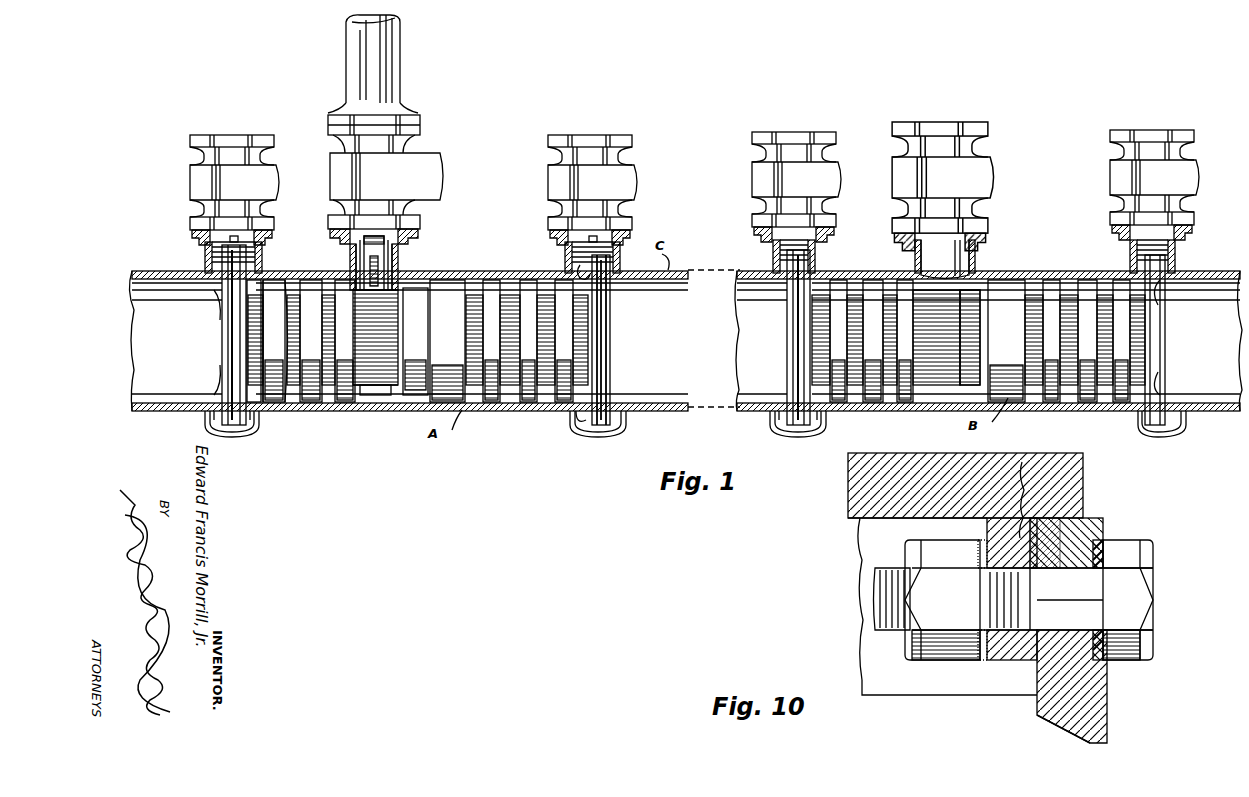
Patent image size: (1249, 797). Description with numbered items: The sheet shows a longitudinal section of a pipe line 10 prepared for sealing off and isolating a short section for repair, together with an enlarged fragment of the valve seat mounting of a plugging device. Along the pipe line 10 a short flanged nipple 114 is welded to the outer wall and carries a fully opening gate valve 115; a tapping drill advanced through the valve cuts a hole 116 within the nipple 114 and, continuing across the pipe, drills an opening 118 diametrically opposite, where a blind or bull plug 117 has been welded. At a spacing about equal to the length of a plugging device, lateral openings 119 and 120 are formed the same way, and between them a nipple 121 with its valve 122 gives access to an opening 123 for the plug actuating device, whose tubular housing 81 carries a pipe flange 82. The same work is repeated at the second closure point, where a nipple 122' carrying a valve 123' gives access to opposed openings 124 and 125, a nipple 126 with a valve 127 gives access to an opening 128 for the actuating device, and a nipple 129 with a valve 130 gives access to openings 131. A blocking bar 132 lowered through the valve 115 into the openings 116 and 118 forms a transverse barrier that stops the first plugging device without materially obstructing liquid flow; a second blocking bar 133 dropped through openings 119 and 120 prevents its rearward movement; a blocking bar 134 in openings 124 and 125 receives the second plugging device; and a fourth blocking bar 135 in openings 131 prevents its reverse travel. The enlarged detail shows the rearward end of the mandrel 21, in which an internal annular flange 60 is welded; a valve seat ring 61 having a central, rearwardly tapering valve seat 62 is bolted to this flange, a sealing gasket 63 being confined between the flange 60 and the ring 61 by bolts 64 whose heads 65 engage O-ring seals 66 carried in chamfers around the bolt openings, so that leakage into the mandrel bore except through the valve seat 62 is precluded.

In FIG. 1, the pipe line 10 is at (412, 408).
In FIG. 1, the tubular housing 81 is at (393, 65).
In FIG. 1, the pipe flange 82 is at (420, 118).
In FIG. 1, the flanged nipple 114 is at (208, 244).
In FIG. 1, the gate valve 115 is at (196, 180).
In FIG. 1, the hole 116 is at (222, 290).
In FIG. 1, the bull plug 117 is at (260, 428).
In FIG. 1, the opening 118 is at (222, 400).
In FIG. 1, the lateral opening 119 is at (578, 252).
In FIG. 1, the lateral opening 120 is at (570, 420).
In FIG. 1, the nipple 121 is at (398, 262).
In FIG. 1, the valve 122 is at (402, 189).
In FIG. 1, the nipple 122' is at (819, 256).
In FIG. 1, the opening 123 is at (416, 319).
In FIG. 1, the valve 123' is at (804, 177).
In FIG. 1, the opening 124 is at (785, 284).
In FIG. 1, the opening 125 is at (787, 400).
In FIG. 1, the nipple 126 is at (972, 262).
In FIG. 1, the valve 127 is at (1010, 180).
In FIG. 1, the opening 128 is at (936, 272).
In FIG. 1, the nipple 129 is at (1165, 262).
In FIG. 1, the valve 130 is at (1195, 160).
In FIG. 1, the openings 131 is at (1165, 300).
In FIG. 1, the blocking bar 132 is at (222, 336).
In FIG. 1, the blocking bar 133 is at (600, 372).
In FIG. 1, the blocking bar 134 is at (790, 346).
In FIG. 1, the blocking bar 135 is at (1155, 338).
In FIG. 10, the mandrel 21 is at (850, 490).
In FIG. 10, the internal annular flange 60 is at (1025, 462).
In FIG. 10, the valve seat ring 61 is at (1110, 710).
In FIG. 10, the valve seat 62 is at (1045, 725).
In FIG. 10, the sealing gasket 63 is at (1070, 538).
In FIG. 10, the bolts 64 is at (875, 585).
In FIG. 10, the bolt heads 65 is at (1128, 648).
In FIG. 10, the O-ring seals 66 is at (1108, 540).